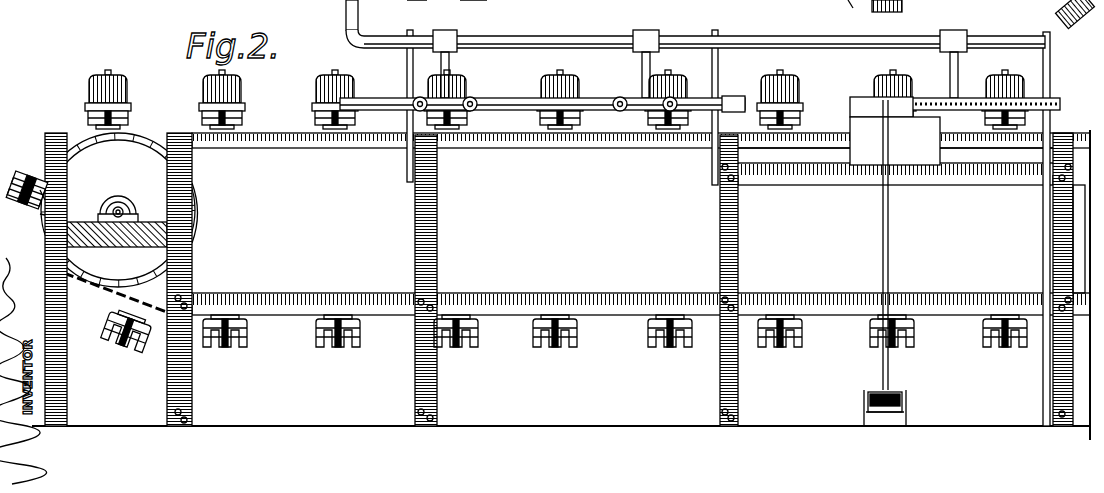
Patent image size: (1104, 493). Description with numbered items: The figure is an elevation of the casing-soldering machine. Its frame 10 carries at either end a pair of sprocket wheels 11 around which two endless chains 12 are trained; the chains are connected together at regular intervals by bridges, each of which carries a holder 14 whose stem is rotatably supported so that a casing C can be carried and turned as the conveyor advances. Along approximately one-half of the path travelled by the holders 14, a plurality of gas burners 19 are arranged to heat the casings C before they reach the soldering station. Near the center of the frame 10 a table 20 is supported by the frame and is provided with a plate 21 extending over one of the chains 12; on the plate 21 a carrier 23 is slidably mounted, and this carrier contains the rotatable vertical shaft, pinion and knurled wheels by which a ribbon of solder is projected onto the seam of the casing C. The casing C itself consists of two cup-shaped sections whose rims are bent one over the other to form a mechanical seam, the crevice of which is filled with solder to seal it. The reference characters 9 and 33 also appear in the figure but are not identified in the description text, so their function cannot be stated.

The machine 9 is at (572, 49).
The frame 10 is at (427, 237).
The sprocket wheels 11 is at (197, 216).
The endless chains 12 is at (147, 133).
The holder 14 is at (317, 114).
The gas burners 19 is at (560, 94).
The table 20 is at (860, 147).
The plate 21 is at (1025, 14).
The carrier 23 is at (912, 9).
The element 33 is at (845, 15).
The casing C is at (323, 88).